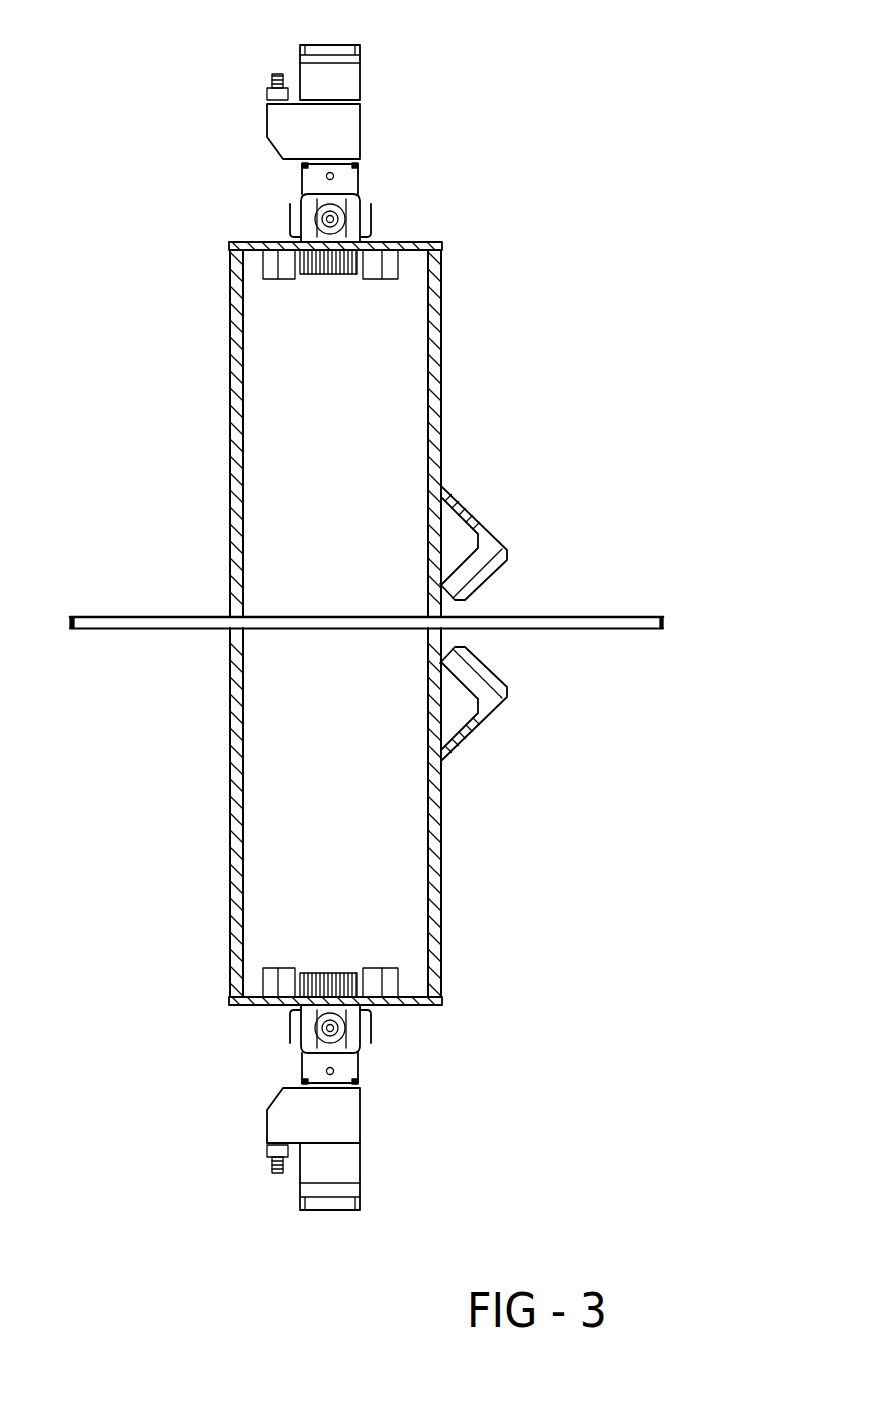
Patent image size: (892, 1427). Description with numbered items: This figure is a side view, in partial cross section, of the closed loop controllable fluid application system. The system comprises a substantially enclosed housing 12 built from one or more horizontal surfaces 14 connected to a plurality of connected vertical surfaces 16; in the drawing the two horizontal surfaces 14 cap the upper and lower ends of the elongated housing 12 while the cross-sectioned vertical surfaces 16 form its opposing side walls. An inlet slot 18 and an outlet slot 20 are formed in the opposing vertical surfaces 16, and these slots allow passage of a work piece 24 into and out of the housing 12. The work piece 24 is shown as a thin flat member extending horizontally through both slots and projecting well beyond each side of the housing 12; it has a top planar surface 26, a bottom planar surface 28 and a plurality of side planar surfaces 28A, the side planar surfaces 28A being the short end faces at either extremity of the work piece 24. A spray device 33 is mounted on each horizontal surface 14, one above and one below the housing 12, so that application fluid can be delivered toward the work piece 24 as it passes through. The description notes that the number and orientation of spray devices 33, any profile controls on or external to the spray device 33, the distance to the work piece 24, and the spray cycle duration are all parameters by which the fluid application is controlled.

The housing 12 is at (228, 331).
The horizontal surface 14 is at (250, 242).
The vertical surface 16 is at (442, 383).
The inlet slot 18 is at (424, 614).
The outlet slot 20 is at (240, 616).
The work piece 24 is at (590, 617).
The top planar surface 26 is at (503, 617).
The bottom planar surface 28 is at (142, 630).
The side planar surface 28A is at (70, 616).
The spray device 33 is at (362, 88).